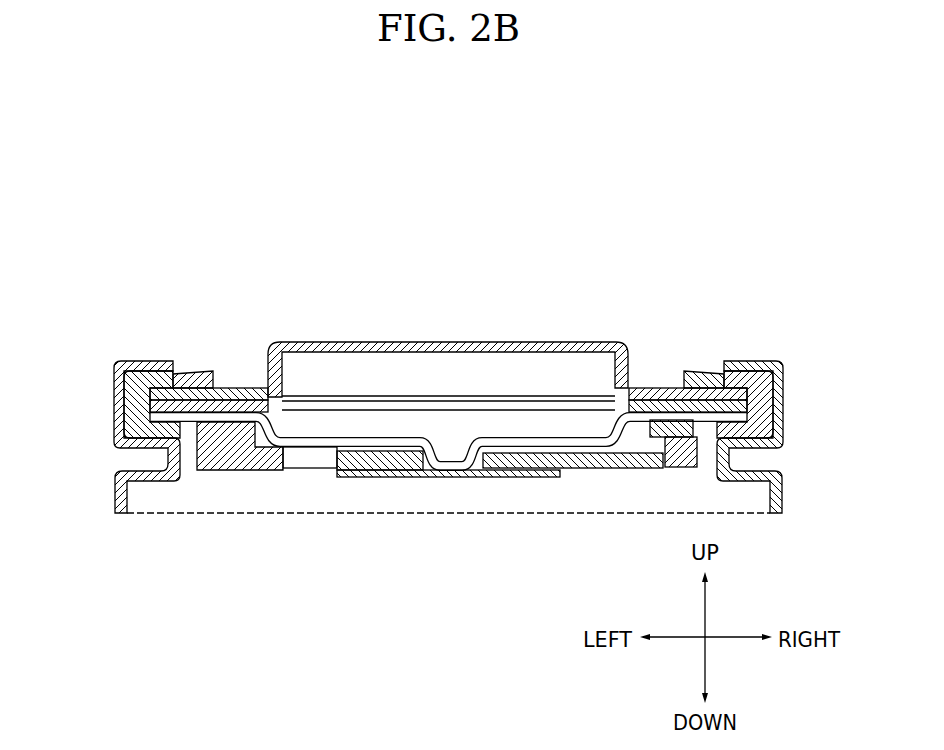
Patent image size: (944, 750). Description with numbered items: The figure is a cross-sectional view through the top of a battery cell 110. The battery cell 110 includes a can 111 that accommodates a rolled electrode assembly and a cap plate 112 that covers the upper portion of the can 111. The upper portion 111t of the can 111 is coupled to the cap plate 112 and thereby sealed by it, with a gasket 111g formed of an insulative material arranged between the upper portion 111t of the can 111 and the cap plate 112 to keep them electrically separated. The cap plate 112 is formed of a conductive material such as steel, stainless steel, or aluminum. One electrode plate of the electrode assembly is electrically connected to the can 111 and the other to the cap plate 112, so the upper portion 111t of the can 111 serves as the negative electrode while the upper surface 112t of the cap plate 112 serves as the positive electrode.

The battery cell 110 is at (662, 292).
The can 111 is at (117, 503).
The upper portion of the can 111t is at (153, 360).
The gasket 111g is at (140, 398).
The cap plate 112 is at (319, 334).
The upper surface of the cap plate 112t is at (508, 341).